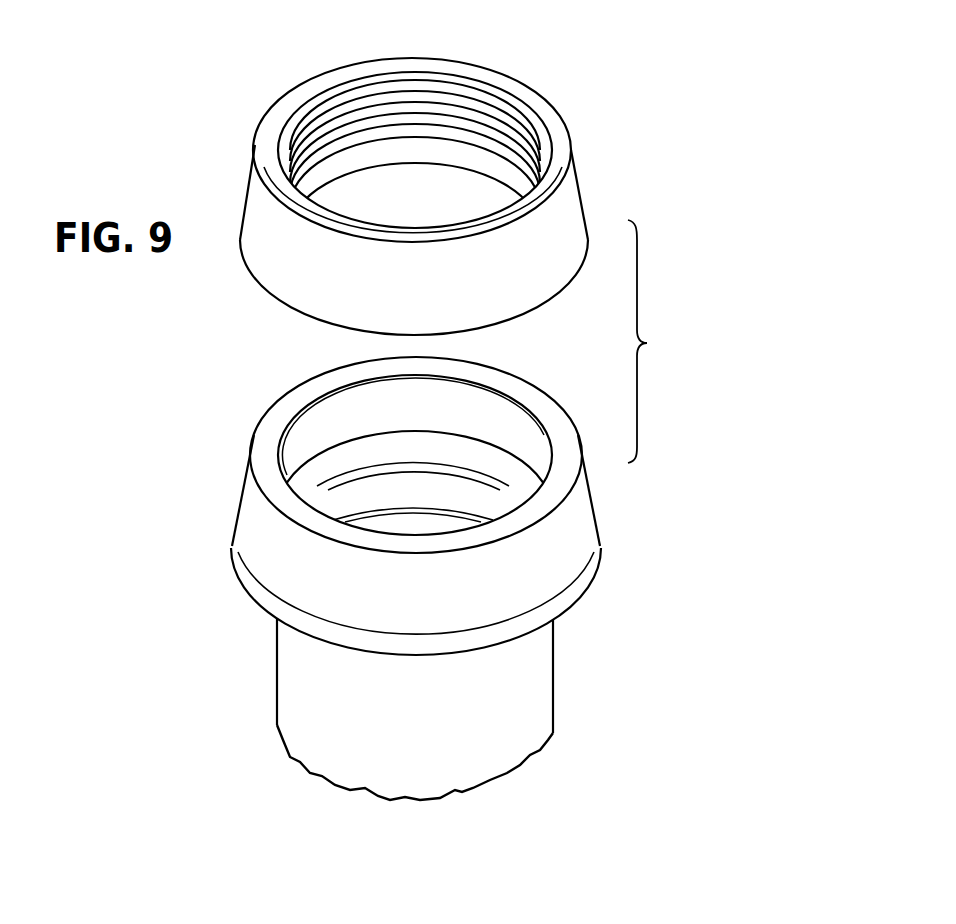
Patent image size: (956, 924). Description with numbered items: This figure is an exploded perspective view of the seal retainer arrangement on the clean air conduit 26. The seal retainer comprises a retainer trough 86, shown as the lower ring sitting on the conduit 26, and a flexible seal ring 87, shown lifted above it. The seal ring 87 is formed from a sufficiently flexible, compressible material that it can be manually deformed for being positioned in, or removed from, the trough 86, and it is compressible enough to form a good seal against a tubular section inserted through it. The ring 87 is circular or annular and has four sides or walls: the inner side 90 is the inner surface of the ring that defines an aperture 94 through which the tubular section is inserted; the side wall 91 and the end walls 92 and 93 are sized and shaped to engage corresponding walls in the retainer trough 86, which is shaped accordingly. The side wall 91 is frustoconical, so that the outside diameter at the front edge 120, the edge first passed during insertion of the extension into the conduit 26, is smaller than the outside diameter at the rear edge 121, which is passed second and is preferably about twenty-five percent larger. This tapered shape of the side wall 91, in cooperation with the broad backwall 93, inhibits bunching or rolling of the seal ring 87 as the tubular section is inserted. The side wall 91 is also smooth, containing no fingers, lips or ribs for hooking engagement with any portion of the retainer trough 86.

The clean air conduit 26 is at (553, 642).
The retainer trough 86 is at (512, 415).
The seal ring 87 is at (575, 192).
The inner side 90 is at (463, 117).
The side wall 91 is at (312, 285).
The end wall 92 is at (552, 118).
The backwall 93 is at (527, 313).
The aperture 94 is at (400, 92).
The front edge 120 is at (263, 125).
The rear edge 121 is at (260, 278).